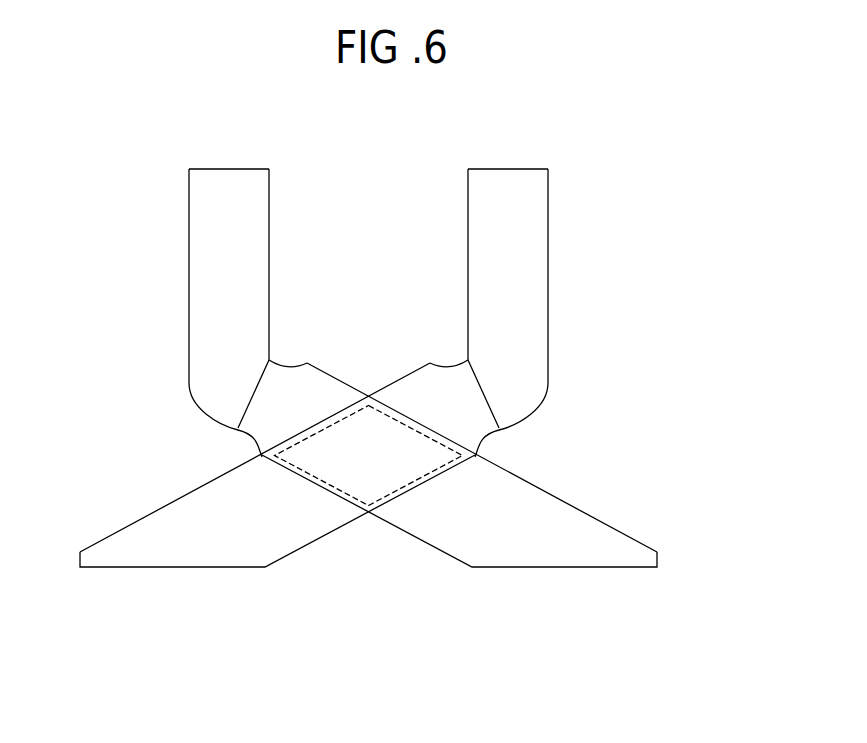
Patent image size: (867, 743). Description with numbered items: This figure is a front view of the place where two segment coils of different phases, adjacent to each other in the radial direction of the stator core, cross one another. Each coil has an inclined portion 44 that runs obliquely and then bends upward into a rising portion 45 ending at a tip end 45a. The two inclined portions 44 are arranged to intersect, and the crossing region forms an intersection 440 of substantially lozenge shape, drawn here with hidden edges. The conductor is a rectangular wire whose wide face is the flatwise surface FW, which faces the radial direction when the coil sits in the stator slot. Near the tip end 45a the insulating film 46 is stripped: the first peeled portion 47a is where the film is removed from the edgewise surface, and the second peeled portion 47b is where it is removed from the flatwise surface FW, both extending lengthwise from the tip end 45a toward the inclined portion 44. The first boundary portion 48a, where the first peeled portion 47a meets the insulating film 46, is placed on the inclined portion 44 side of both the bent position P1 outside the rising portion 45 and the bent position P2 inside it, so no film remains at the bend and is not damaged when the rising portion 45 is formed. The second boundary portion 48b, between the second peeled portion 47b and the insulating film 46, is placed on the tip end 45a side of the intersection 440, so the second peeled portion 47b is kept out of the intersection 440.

The inclined portion 44 is at (291, 578).
The intersection 440 is at (335, 488).
The rising portion 45 is at (176, 228).
The tip end 45a is at (228, 168).
The insulating film 46 is at (137, 540).
The first peeled portion 47a is at (270, 227).
The second peeled portion 47b is at (208, 283).
The first boundary portion 48a is at (258, 452).
The second boundary portion 48b is at (245, 402).
The flatwise surface FW is at (208, 183).
The bent position outside the rising portion P1 is at (536, 410).
The bent position inside the rising portion P2 is at (458, 358).